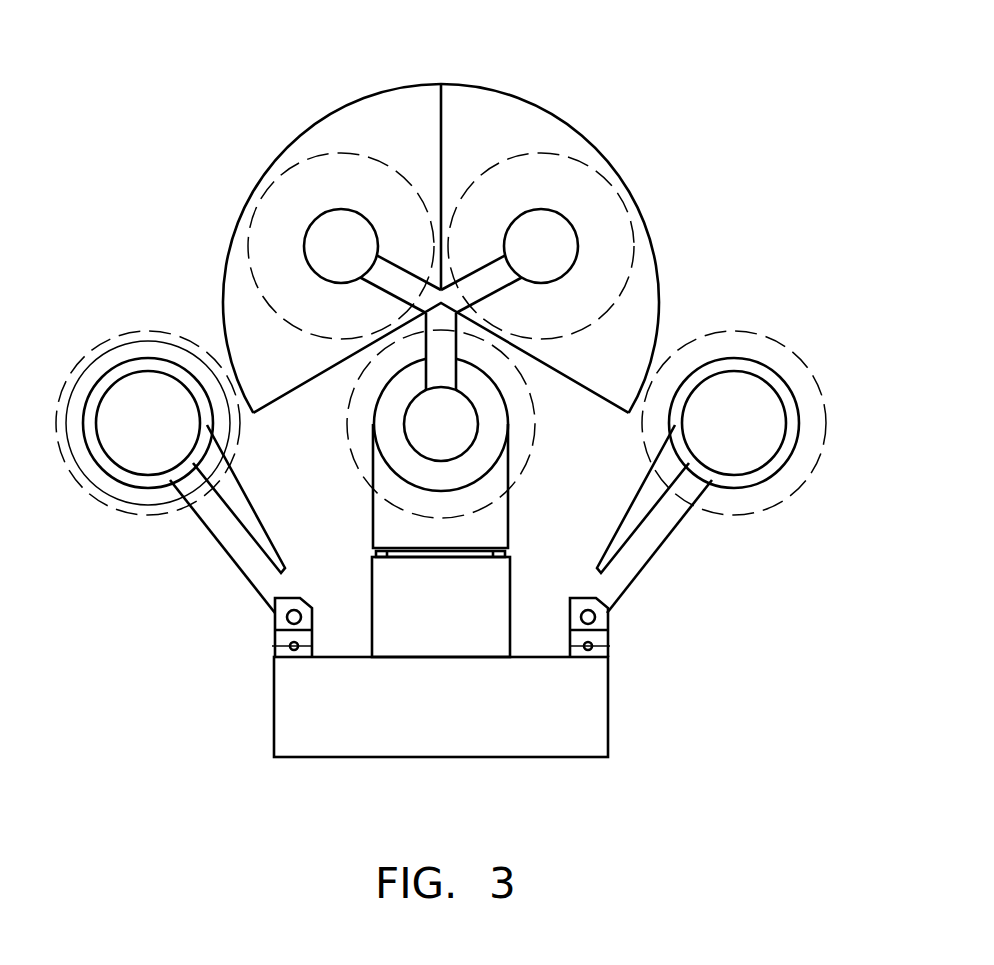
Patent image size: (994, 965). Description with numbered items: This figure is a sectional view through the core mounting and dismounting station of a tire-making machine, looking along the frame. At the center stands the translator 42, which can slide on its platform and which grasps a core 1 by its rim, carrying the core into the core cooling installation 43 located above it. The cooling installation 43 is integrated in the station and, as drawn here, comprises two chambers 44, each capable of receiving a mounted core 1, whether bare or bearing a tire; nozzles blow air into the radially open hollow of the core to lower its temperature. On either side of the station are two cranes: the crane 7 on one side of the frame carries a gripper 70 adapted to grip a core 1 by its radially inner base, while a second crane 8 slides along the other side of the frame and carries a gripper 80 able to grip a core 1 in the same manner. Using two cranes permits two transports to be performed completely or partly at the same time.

The core 1 is at (117, 358).
The crane 7 is at (242, 553).
The crane 8 is at (638, 558).
The translator 42 is at (483, 525).
The core cooling installation 43 is at (637, 118).
The chambers 44 is at (357, 117).
The gripper 70 is at (115, 472).
The gripper 80 is at (768, 467).